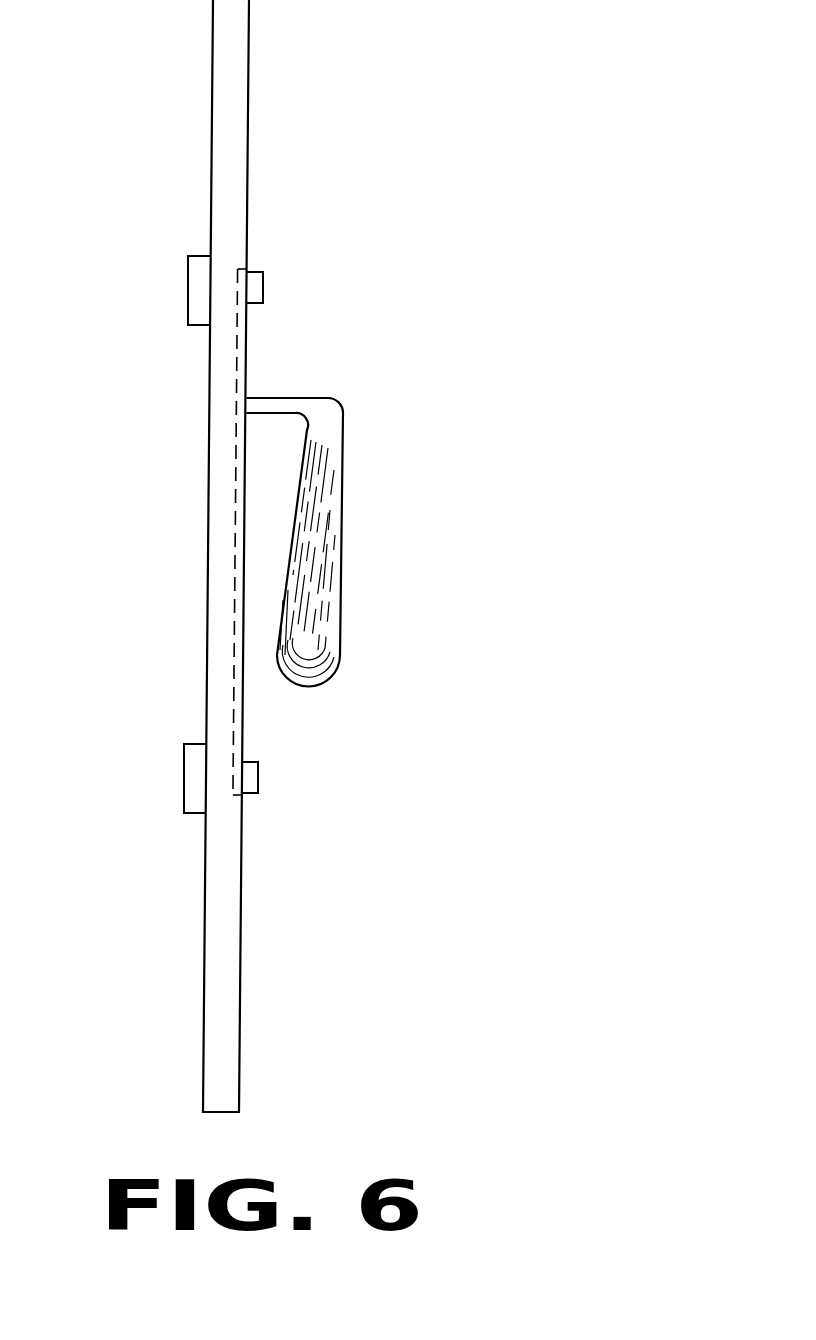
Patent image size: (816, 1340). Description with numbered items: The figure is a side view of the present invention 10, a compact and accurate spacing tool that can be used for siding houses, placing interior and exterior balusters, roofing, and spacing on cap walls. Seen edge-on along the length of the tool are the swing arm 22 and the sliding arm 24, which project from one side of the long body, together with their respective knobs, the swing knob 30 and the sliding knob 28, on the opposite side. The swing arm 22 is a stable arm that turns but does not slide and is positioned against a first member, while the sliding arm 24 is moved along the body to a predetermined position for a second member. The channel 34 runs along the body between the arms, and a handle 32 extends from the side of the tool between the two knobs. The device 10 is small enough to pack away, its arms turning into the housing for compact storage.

The present invention 10 is at (357, 170).
The swing arm 22 is at (188, 292).
The sliding arm 24 is at (186, 783).
The sliding knob 28 is at (250, 778).
The swing knob 30 is at (263, 283).
The handle 32 is at (337, 537).
The channel 34 is at (243, 367).